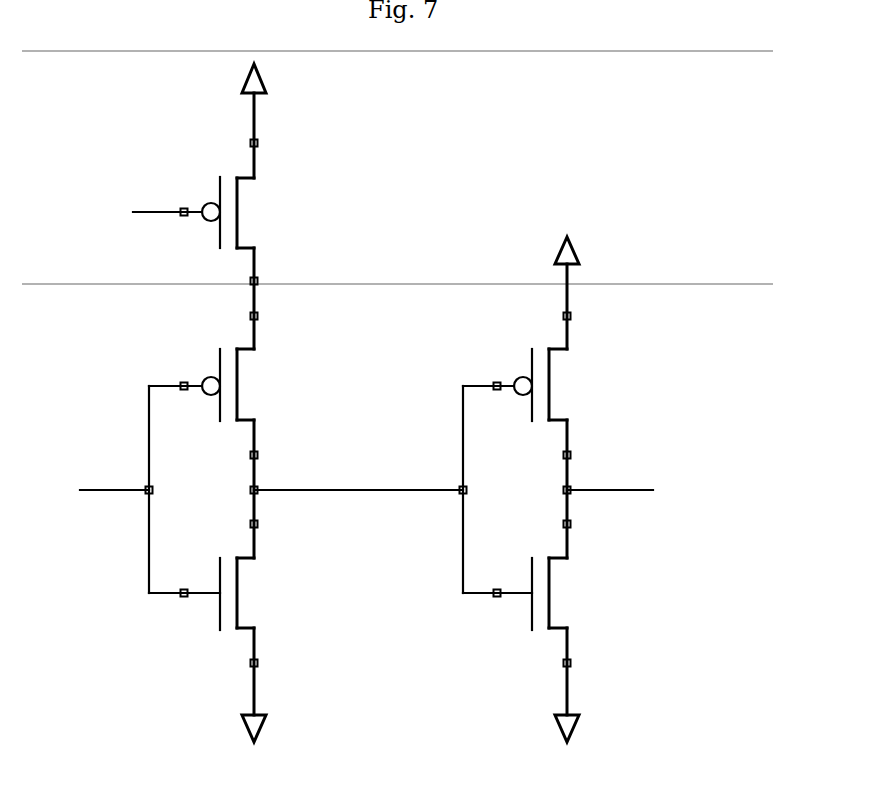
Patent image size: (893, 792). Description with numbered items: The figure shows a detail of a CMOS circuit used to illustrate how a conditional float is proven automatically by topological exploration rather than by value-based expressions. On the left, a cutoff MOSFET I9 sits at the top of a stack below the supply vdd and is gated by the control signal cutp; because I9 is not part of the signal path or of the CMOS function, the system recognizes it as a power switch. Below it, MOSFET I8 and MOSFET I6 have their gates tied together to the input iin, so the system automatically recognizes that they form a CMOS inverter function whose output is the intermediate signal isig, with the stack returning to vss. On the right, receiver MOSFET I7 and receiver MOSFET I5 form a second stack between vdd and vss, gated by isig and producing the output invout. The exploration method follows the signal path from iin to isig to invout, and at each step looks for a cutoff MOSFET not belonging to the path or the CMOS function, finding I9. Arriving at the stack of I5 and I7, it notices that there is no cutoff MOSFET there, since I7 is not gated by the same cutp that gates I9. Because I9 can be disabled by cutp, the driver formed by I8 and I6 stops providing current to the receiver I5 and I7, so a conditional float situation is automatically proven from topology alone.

The cutoff MOSFET I9 is at (261, 204).
The MOSFET I8 is at (261, 377).
The receiver MOSFET I7 is at (573, 376).
The MOSFET I6 is at (270, 585).
The receiver MOSFET I5 is at (582, 586).
The power supply rail vdd is at (438, 206).
The ground rail vss is at (434, 685).
The cutoff control signal cutp is at (131, 211).
The input signal iin is at (131, 490).
The intermediate signal isig is at (393, 490).
The inverter output signal invout is at (662, 488).